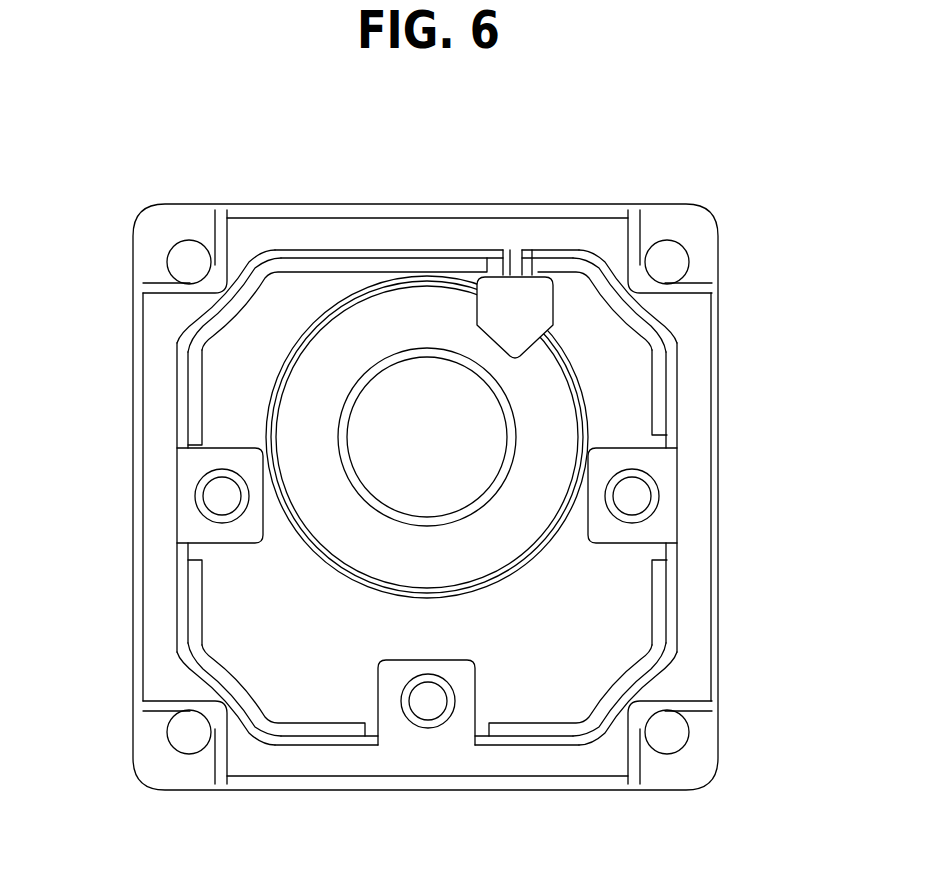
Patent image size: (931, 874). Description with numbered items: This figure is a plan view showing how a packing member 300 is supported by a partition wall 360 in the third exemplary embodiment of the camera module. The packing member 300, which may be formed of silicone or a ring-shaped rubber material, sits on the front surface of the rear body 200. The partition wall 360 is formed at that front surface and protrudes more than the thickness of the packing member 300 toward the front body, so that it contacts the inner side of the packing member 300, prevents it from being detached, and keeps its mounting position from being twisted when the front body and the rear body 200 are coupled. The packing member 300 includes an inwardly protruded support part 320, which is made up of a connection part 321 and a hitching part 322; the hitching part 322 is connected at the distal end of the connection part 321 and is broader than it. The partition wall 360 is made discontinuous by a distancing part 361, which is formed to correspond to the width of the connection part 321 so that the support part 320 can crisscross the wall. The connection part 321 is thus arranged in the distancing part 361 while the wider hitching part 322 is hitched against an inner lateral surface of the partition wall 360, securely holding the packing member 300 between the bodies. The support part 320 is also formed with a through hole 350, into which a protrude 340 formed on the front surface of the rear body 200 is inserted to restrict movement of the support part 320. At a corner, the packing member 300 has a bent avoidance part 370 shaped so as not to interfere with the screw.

The rear body 200 is at (145, 252).
The packing member 300 is at (367, 230).
The support part 320 is at (642, 152).
The connection part 321 is at (513, 258).
The hitching part 322 is at (517, 313).
The protrude 340 is at (428, 713).
The through hole 350 is at (403, 710).
The partition wall 360 is at (660, 580).
The distancing part 361 is at (193, 442).
The avoidance part 370 is at (647, 278).